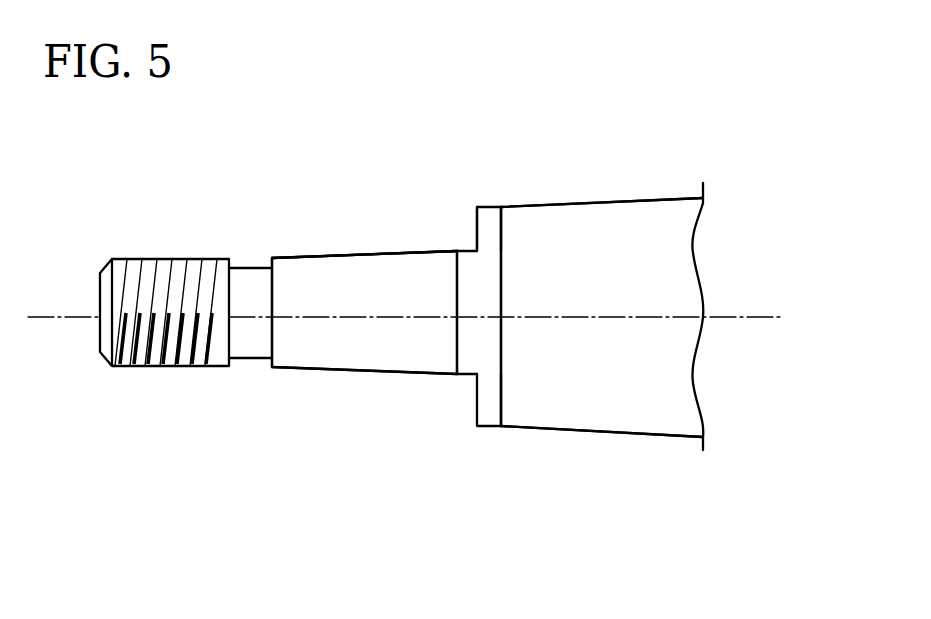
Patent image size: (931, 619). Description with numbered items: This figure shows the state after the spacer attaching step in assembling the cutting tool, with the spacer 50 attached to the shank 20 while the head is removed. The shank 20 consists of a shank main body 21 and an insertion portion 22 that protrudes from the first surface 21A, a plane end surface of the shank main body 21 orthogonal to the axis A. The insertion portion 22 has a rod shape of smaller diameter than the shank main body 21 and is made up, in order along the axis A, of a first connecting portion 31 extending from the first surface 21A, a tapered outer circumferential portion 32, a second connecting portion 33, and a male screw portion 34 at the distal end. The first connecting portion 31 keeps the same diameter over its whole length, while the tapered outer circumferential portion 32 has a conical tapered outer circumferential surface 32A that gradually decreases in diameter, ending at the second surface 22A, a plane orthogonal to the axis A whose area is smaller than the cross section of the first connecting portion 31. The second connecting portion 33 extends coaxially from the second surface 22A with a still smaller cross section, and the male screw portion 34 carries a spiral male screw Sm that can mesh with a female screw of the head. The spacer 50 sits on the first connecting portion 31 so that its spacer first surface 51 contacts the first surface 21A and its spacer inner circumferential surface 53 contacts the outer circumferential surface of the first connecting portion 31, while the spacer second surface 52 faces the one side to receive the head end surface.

The shank 20 is at (597, 200).
The shank main body 21 is at (647, 208).
The first surface 21A is at (502, 400).
The insertion portion 22 is at (308, 368).
The second surface 22A is at (272, 280).
The first connecting portion 31 is at (480, 339).
The tapered outer circumferential portion 32 is at (370, 352).
The tapered outer circumferential surface 32A is at (358, 255).
The second connecting portion 33 is at (250, 337).
The male screw portion 34 is at (140, 352).
The male screw Sm is at (184, 366).
The spacer 50 is at (488, 225).
The spacer first surface 51 is at (502, 230).
The spacer second surface 52 is at (477, 230).
The spacer inner circumferential surface 53 is at (491, 375).
The axis A is at (765, 315).